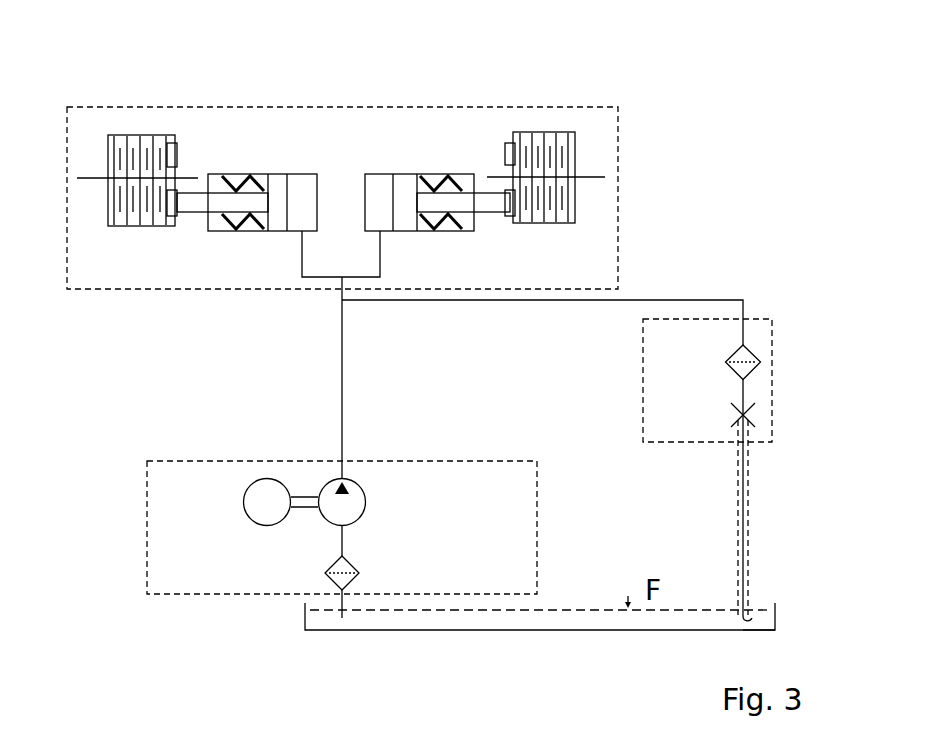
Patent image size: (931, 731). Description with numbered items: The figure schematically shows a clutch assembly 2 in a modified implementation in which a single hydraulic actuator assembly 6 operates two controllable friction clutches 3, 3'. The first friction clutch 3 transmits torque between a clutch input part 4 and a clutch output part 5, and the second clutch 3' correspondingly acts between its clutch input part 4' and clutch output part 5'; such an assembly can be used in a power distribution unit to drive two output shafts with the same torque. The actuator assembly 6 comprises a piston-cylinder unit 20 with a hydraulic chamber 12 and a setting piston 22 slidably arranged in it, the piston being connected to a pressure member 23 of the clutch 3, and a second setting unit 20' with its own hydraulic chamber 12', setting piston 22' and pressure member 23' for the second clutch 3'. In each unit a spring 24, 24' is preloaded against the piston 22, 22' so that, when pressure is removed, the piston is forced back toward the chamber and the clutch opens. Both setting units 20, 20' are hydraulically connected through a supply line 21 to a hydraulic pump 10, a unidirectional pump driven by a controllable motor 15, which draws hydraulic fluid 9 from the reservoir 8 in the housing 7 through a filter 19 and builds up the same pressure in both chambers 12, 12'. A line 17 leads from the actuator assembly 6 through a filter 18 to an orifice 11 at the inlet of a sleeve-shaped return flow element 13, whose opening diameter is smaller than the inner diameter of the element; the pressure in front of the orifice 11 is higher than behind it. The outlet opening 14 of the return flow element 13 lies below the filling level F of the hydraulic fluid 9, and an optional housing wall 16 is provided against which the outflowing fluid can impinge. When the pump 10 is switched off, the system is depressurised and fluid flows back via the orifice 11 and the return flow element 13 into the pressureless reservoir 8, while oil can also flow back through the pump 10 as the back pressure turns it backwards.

The clutch assembly 2 is at (773, 118).
The controllable friction clutch 3 is at (544, 115).
The second clutch 3' is at (141, 120).
The clutch input part 4 is at (501, 130).
The clutch input part 4' is at (208, 137).
The clutch output part 5 is at (573, 143).
The clutch output part 5' is at (113, 139).
The hydraulic actuator assembly 6 is at (340, 128).
The housing 7 is at (303, 622).
The reservoir 8 is at (593, 511).
The hydraulic fluid 9 is at (503, 629).
The hydraulic pump 10 is at (352, 481).
The orifice 11 is at (752, 415).
The hydraulic chamber 12 is at (392, 147).
The hydraulic chamber 12' is at (300, 148).
The return flow element 13 is at (750, 487).
The outlet opening 14 is at (750, 622).
The controllable motor 15 is at (265, 478).
The housing wall 16 is at (740, 630).
The line 17 is at (588, 300).
The filter 18 is at (760, 350).
The filter 19 is at (352, 565).
The piston-cylinder unit 20 is at (426, 146).
The second setting unit 20' is at (259, 152).
The supply line 21 is at (340, 330).
The setting piston 22 is at (429, 230).
The setting piston 22' is at (257, 230).
The pressure member 23 is at (528, 98).
The pressure member 23' is at (199, 108).
The spring 24 is at (461, 249).
The spring 24' is at (224, 249).